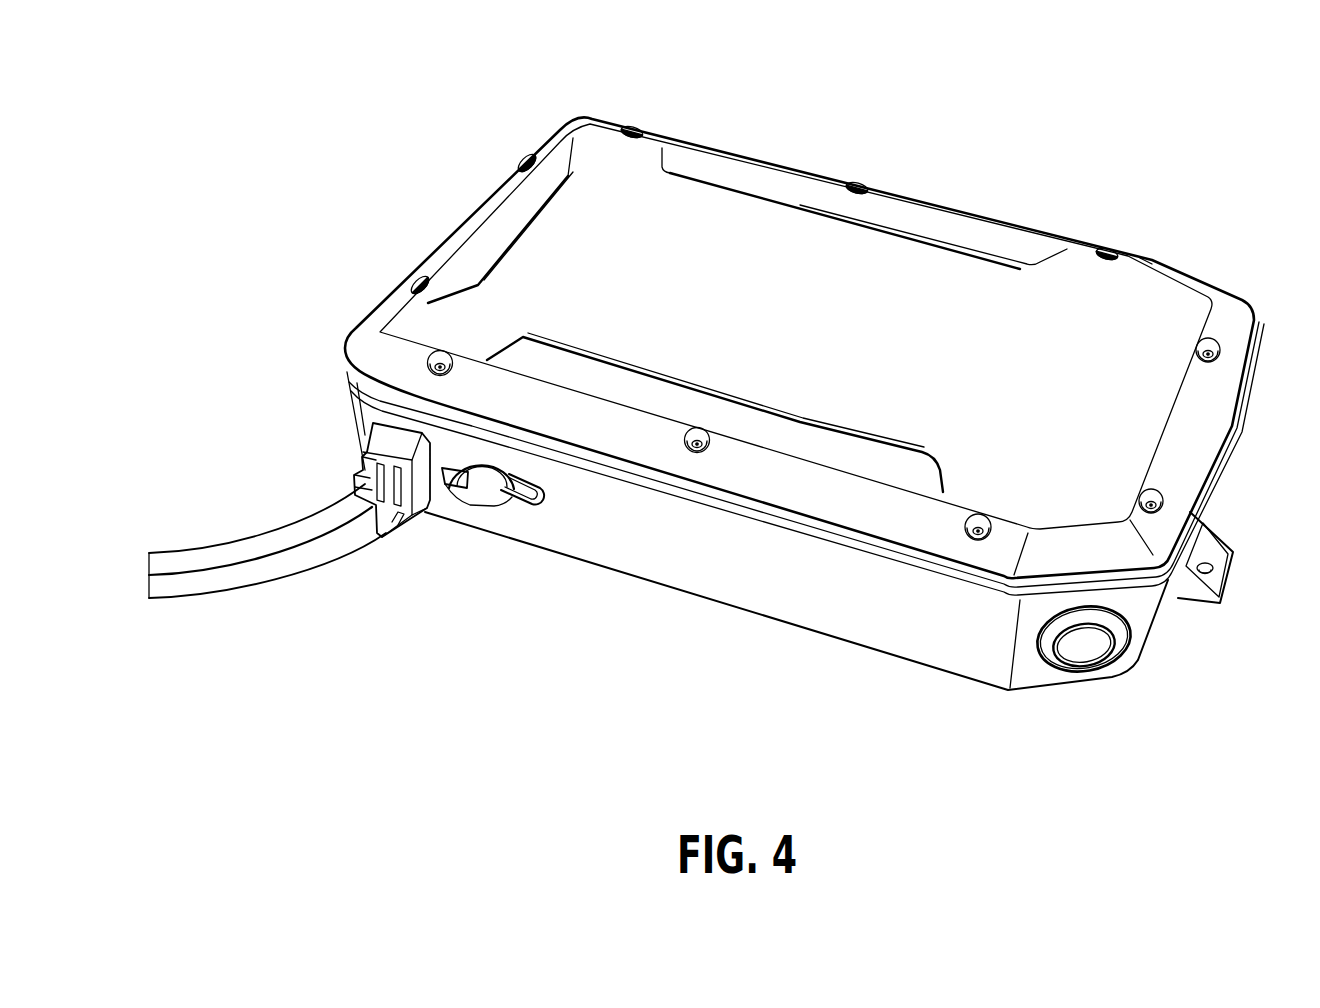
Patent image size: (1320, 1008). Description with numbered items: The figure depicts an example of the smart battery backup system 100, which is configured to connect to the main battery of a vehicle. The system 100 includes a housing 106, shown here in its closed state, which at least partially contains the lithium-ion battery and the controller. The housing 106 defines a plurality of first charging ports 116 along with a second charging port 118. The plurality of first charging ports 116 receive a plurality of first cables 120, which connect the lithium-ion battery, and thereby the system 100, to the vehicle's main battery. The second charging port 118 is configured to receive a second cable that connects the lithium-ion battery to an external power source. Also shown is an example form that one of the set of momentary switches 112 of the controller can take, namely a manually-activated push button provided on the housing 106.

The smart battery backup system 100 is at (1070, 123).
The housing 106 is at (737, 174).
The set of momentary switches 112 is at (1083, 655).
The plurality of first charging ports 116 is at (395, 423).
The second charging port 118 is at (472, 490).
The plurality of first cables 120 is at (254, 577).